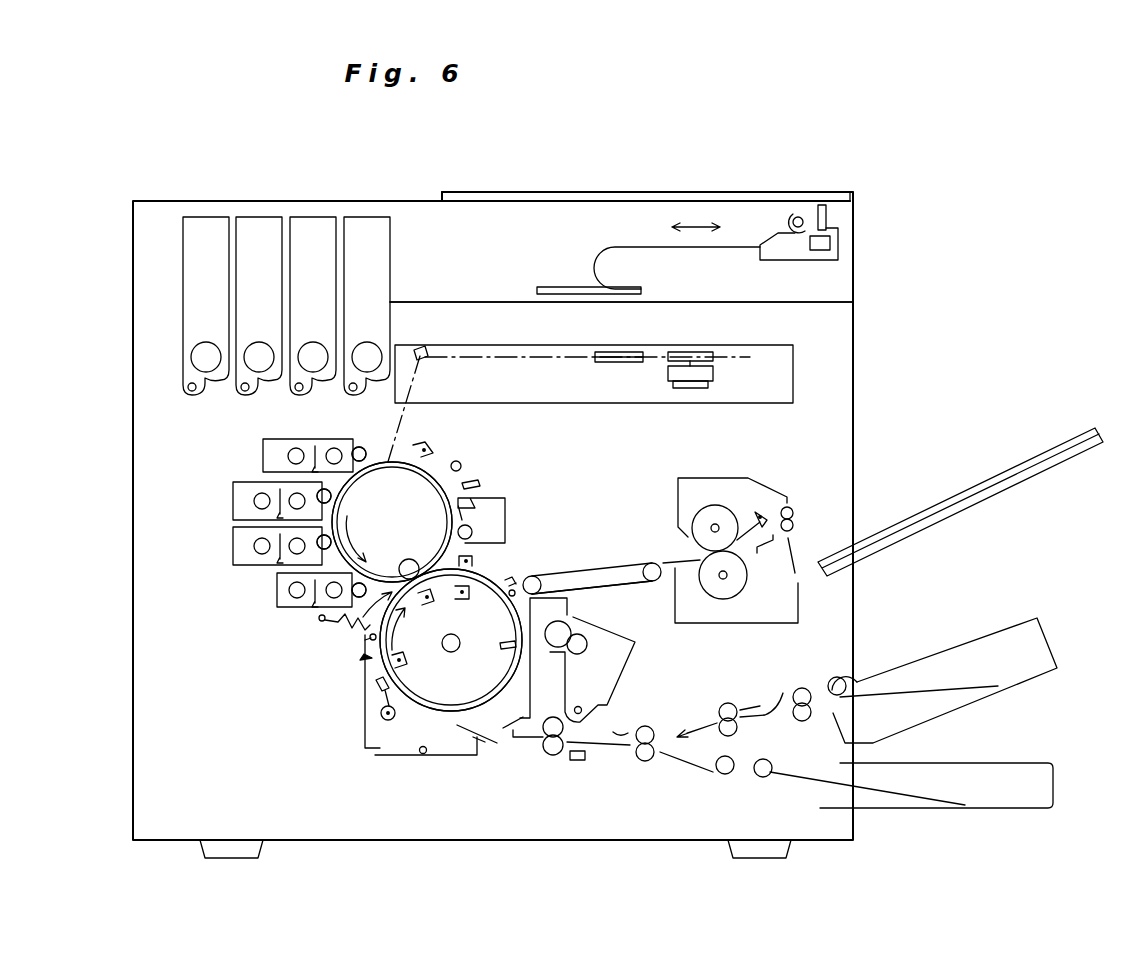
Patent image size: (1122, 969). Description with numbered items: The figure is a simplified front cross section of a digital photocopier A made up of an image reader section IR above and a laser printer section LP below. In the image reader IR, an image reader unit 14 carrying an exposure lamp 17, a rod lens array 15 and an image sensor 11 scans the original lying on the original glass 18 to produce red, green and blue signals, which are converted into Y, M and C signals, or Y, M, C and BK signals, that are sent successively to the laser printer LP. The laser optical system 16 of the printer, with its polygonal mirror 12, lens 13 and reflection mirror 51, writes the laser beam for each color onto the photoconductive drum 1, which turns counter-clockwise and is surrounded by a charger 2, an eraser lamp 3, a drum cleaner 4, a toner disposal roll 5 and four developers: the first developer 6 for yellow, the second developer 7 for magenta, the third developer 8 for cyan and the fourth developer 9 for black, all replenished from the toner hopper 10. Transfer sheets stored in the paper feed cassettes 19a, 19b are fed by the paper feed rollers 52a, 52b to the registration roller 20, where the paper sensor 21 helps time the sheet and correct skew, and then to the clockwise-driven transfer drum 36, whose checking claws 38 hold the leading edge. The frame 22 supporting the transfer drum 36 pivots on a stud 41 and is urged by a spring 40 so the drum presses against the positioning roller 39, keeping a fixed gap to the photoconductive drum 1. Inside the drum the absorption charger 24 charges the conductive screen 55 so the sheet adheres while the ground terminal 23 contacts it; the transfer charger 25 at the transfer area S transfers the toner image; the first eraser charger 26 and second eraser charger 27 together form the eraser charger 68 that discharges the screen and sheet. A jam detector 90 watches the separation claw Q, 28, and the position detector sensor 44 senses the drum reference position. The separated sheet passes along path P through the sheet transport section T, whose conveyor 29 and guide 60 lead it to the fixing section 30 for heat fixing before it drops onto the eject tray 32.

The photoconductive drum 1 is at (456, 483).
The charger 2 is at (425, 447).
The eraser lamp 3 is at (460, 462).
The drum cleaner 4 is at (505, 498).
The toner disposal roll 5 is at (475, 528).
The first developer 6 is at (263, 452).
The second developer 7 is at (233, 500).
The third developer 8 is at (233, 552).
The fourth developer 9 is at (277, 591).
The toner hopper 10 is at (366, 217).
The image sensor 11 is at (835, 243).
The polygonal mirror 12 is at (713, 357).
The lens 13 is at (612, 362).
The image reader unit 14 is at (798, 270).
The rod lens array 15 is at (824, 205).
The laser optical system 16 is at (672, 348).
The exposure lamp 17 is at (800, 215).
The original glass 18 is at (648, 192).
The paper feed cassette 19a is at (920, 808).
The paper feed cassette 19b is at (945, 710).
The registration roller 20 is at (553, 757).
The paper sensor 21 is at (587, 757).
The frame 22 is at (363, 738).
The ground terminal 23 is at (378, 692).
The absorption charger 24 is at (405, 668).
The transfer charger 25 is at (432, 605).
The first eraser charger 26 is at (469, 600).
The second eraser charger 27 is at (448, 540).
The separation claw 28 is at (520, 577).
The conveyor belt 29 is at (650, 562).
The fixing section 30 is at (767, 482).
The eject tray 32 is at (985, 500).
The transfer drum 36 is at (360, 660).
The checking claws 38 is at (445, 718).
The positioning roller 39 is at (408, 558).
The spring 40 is at (343, 633).
The stud 41 is at (562, 604).
The position detector sensor 44 is at (506, 648).
The reflection mirror 51 is at (420, 350).
The paper feed roller 52a is at (763, 777).
The paper feed roller 52b is at (857, 677).
The conductive screen 55 is at (410, 715).
The paper guide 60 is at (478, 743).
The eraser charger 68 is at (486, 566).
The jam detector 90 is at (480, 482).
The digital photocopier A is at (515, 186).
The image reader section IR is at (909, 191).
The laser printer section LP is at (897, 406).
The paper feed path P is at (461, 746).
The separation claw Q is at (501, 576).
The transfer area S is at (330, 632).
The sheet transport section T is at (649, 594).
The yellow signal Y is at (366, 440).
The magenta signal M is at (330, 483).
The cyan signal C is at (326, 532).
The black signal BK is at (341, 576).